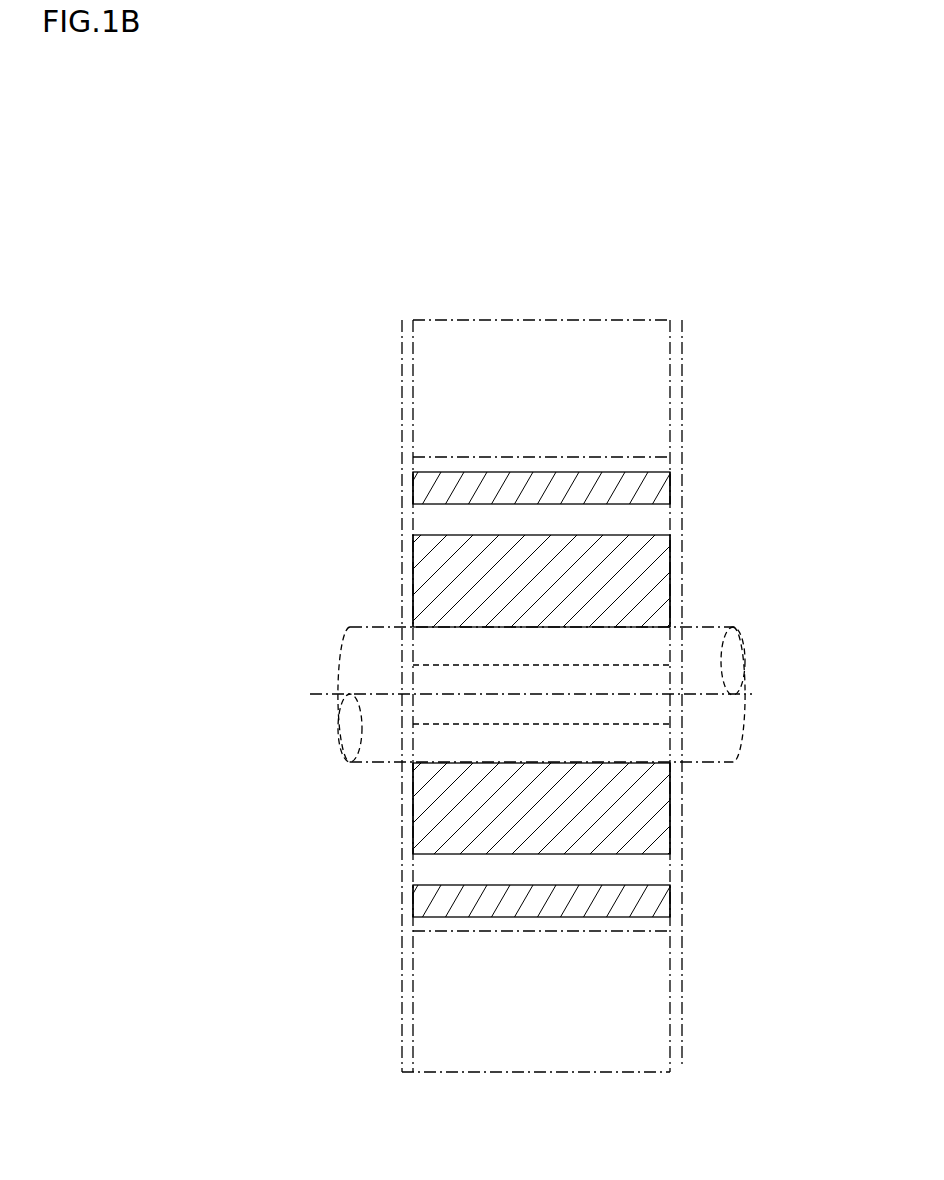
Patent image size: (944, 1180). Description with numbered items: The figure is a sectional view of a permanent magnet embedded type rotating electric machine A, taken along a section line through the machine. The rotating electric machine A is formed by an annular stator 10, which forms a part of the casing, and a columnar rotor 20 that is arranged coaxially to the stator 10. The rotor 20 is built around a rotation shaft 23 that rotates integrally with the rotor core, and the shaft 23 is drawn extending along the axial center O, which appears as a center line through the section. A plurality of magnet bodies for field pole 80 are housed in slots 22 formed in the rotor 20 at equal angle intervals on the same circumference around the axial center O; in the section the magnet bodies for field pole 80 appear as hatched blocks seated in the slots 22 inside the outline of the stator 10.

The annular stator 10 is at (676, 1074).
The columnar rotor 20 is at (408, 469).
The slots 22 is at (648, 507).
The rotation shaft 23 is at (732, 627).
The magnet bodies for field pole 80 is at (437, 520).
The permanent magnet embedded type rotating electric machine A is at (410, 318).
The axial center O is at (395, 697).